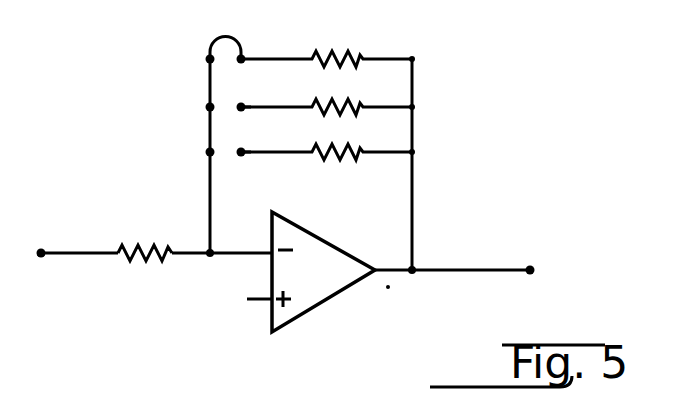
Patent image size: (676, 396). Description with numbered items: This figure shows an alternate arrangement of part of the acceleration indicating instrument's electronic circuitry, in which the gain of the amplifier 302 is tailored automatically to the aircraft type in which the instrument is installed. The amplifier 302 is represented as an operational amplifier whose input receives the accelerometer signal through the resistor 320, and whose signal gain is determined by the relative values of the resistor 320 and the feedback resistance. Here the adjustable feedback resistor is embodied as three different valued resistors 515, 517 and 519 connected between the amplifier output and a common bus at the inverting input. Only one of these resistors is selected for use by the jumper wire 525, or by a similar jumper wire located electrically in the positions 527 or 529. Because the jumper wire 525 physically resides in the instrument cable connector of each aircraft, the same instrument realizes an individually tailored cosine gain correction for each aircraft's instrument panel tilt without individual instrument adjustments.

The amplifier 302 is at (344, 289).
The resistor 320 is at (147, 259).
The resistor 515 is at (352, 54).
The resistor 517 is at (347, 102).
The resistor 519 is at (347, 148).
The jumper wire 525 is at (218, 38).
The jumper wire position 527 is at (233, 102).
The jumper wire position 529 is at (233, 152).